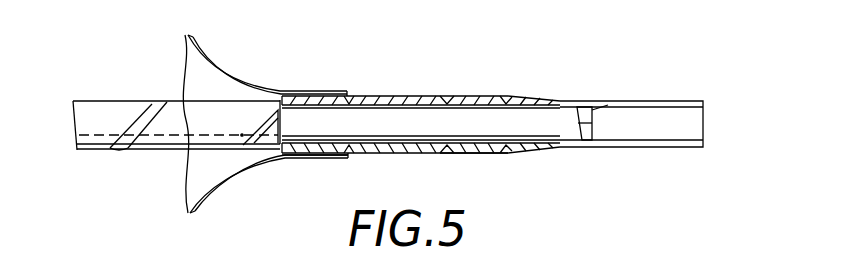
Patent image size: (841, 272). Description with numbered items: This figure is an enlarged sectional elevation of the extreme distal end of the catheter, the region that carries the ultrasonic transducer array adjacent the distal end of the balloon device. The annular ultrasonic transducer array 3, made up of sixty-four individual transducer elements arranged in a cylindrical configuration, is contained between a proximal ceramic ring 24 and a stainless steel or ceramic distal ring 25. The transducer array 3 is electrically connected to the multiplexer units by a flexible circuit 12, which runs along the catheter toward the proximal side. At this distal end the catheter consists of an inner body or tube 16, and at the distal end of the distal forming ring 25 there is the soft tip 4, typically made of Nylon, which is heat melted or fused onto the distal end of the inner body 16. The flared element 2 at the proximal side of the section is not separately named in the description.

The flange 2 is at (193, 69).
The ultrasonic transducer array 3 is at (378, 98).
The soft tip 4 is at (567, 100).
The flexible circuit 12 is at (77, 152).
The inner body 16 is at (597, 107).
The proximal ring 24 is at (322, 160).
The distal ring 25 is at (480, 153).